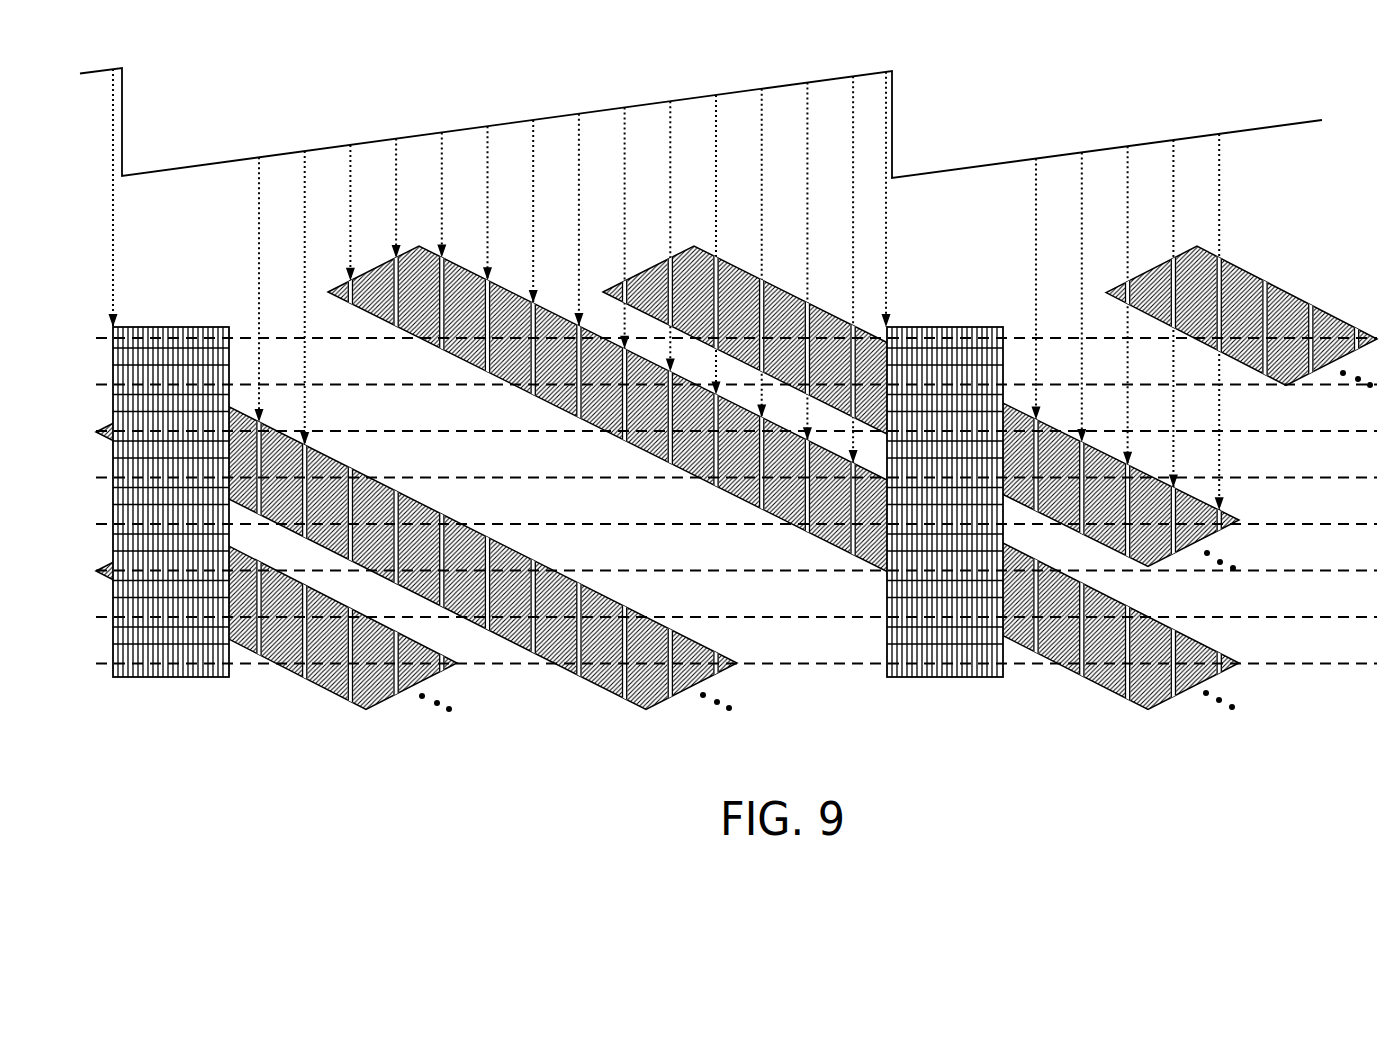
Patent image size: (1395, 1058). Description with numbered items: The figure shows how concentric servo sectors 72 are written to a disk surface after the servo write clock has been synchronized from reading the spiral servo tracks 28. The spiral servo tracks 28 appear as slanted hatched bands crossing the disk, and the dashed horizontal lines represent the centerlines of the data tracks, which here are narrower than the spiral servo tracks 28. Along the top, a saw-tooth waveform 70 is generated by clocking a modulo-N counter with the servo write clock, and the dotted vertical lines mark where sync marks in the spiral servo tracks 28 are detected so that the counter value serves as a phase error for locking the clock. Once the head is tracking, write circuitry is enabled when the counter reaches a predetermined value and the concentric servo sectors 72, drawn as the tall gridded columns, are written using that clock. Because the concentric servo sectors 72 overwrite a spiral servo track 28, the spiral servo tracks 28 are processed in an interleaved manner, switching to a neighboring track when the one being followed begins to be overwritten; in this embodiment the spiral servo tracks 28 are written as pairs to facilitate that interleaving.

The saw-tooth waveform 70 is at (552, 116).
The concentric servo sector 72 is at (558, 527).
The spiral servo track 28 is at (736, 497).